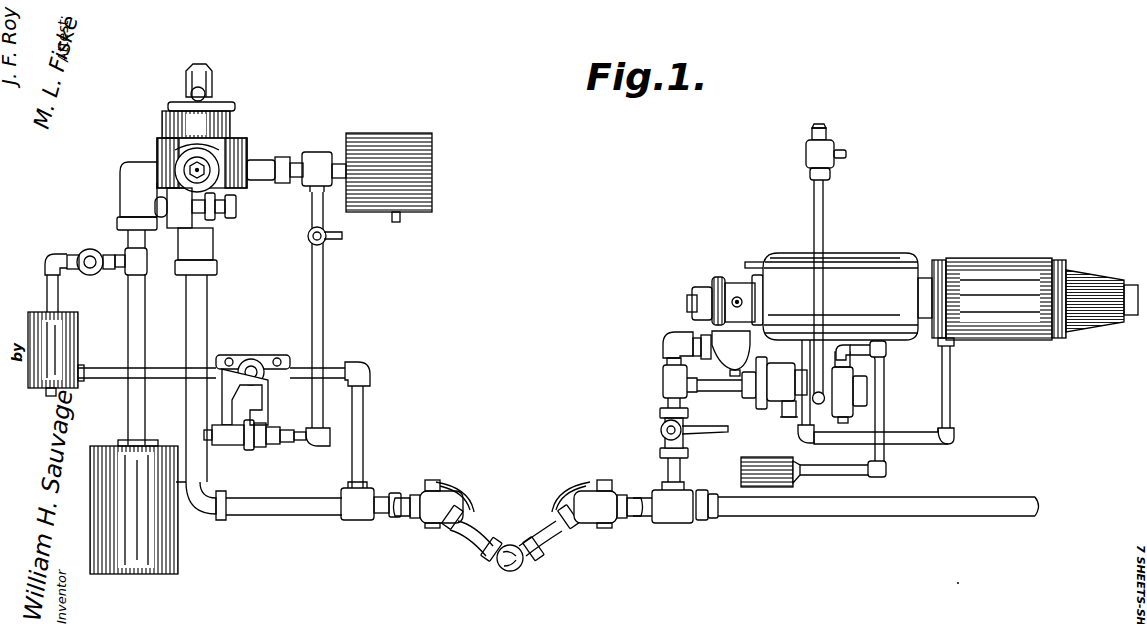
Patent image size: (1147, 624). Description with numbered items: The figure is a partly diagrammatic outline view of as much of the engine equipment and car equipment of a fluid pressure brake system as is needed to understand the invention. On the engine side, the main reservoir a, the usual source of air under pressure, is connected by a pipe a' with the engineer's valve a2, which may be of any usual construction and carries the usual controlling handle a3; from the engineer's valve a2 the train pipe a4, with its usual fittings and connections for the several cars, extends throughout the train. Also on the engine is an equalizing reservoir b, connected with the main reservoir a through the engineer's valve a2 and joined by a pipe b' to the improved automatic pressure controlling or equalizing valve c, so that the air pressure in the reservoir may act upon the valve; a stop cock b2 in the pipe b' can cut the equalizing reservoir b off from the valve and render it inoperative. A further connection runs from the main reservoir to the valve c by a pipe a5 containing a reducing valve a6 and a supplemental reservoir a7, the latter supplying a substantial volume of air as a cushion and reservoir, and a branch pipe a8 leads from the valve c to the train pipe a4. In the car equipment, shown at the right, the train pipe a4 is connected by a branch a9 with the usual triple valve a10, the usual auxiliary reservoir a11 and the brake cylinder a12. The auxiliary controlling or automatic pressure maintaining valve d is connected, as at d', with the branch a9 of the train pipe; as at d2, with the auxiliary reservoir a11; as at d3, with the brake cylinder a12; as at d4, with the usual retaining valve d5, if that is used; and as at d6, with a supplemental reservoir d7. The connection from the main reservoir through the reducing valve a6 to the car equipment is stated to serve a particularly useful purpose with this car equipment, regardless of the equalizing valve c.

The main reservoir a is at (118, 507).
The pipe a' is at (148, 337).
The engineer's valve a2 is at (162, 118).
The controlling handle a3 is at (205, 94).
The train pipe a4 is at (208, 345).
The pipe a5 is at (59, 296).
The reducing valve a6 is at (86, 250).
The supplemental reservoir a7 is at (73, 352).
The branch pipe a8 is at (372, 408).
The branch a9 is at (661, 392).
The triple valve a10 is at (704, 292).
The auxiliary reservoir a11 is at (831, 296).
The brake cylinder a12 is at (1028, 299).
The equalizing reservoir b is at (404, 177).
The pipe b' is at (335, 310).
The stop cock b2 is at (338, 238).
The automatic pressure controlling or equalizing valve c is at (255, 402).
The auxiliary controlling or automatic pressure maintaining valve d is at (806, 396).
The connection to train pipe branch d' is at (718, 404).
The connection to auxiliary reservoir d2 is at (797, 357).
The connection to brake cylinder d3 is at (951, 377).
The connection to retaining valve d4 is at (824, 217).
The retaining valve d5 is at (806, 155).
The connection to supplemental reservoir d6 is at (880, 414).
The supplemental reservoir d7 is at (762, 454).